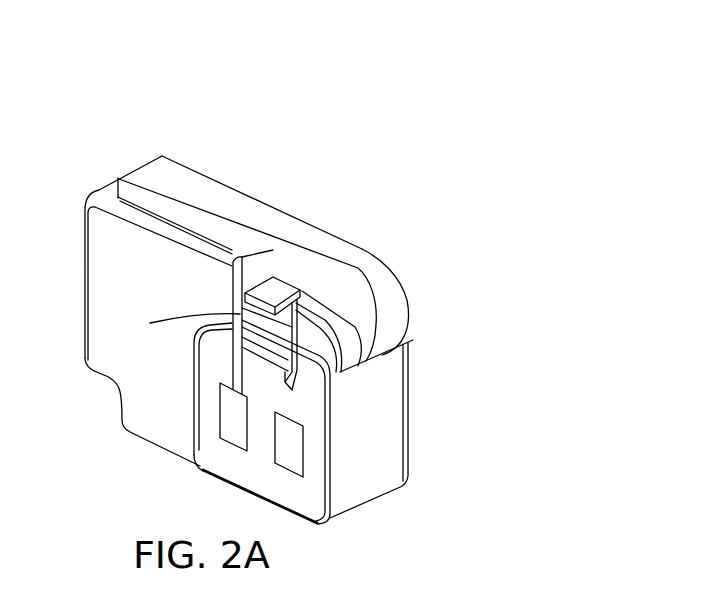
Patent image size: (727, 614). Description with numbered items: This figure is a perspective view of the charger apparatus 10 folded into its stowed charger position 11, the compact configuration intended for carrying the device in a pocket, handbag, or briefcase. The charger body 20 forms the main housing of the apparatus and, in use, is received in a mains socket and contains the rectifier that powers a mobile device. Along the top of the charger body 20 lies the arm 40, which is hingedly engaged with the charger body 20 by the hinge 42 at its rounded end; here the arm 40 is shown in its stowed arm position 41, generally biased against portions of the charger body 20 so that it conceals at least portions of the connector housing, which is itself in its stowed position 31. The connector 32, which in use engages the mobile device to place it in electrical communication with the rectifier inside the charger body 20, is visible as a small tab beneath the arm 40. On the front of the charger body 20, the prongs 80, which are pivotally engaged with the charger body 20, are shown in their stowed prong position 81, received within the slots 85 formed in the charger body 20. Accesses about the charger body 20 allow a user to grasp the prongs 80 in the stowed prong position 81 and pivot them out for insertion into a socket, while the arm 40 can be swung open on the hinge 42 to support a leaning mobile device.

The charger apparatus 10 is at (385, 62).
The stowed charger position 11 is at (410, 117).
The charger body 20 is at (152, 405).
The stowed position 31 is at (278, 295).
The connector 32 is at (284, 292).
The arm 40 is at (182, 171).
The stowed arm position 41 is at (228, 190).
The hinge 42 is at (342, 350).
The prongs 80 is at (243, 308).
The stowed prong position 81 is at (233, 283).
The slots 85 is at (288, 380).